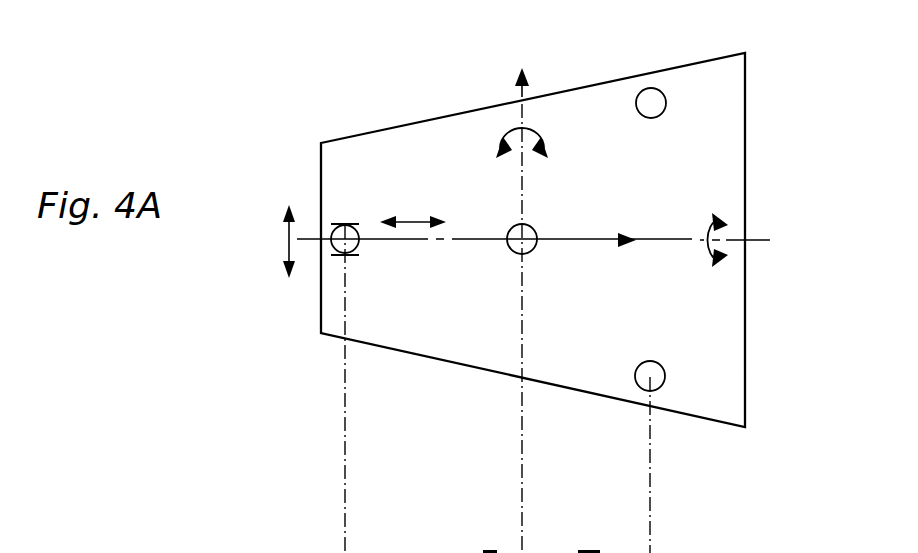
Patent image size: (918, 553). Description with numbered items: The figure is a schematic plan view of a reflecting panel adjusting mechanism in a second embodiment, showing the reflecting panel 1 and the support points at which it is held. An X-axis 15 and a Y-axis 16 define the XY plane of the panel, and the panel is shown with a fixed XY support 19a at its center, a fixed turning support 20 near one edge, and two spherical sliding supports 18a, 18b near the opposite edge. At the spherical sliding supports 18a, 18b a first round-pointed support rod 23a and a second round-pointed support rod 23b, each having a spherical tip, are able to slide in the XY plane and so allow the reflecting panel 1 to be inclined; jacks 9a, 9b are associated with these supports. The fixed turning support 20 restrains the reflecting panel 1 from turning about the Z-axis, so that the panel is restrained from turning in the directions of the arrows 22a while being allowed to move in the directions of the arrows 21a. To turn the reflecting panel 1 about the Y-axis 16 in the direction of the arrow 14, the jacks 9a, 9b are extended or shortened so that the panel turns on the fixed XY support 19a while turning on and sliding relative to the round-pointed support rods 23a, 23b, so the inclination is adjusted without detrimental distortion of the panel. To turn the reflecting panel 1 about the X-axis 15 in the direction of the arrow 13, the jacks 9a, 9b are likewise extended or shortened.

The reflecting panel 1 is at (747, 170).
The jack 9a is at (665, 381).
The jack 9b is at (651, 88).
The arrow 13 is at (708, 267).
The arrow 14 is at (497, 130).
The X-axis 15 is at (770, 240).
The Y-axis 16 is at (530, 73).
The spherical sliding support 18a is at (731, 457).
The spherical sliding support 18b is at (709, 60).
The fixed XY support 19a is at (516, 227).
The fixed turning support 20 is at (335, 225).
The arrows 21a is at (408, 221).
The arrows 22a is at (285, 237).
The first round-pointed support rod 23a is at (731, 457).
The second round-pointed support rod 23b is at (709, 60).